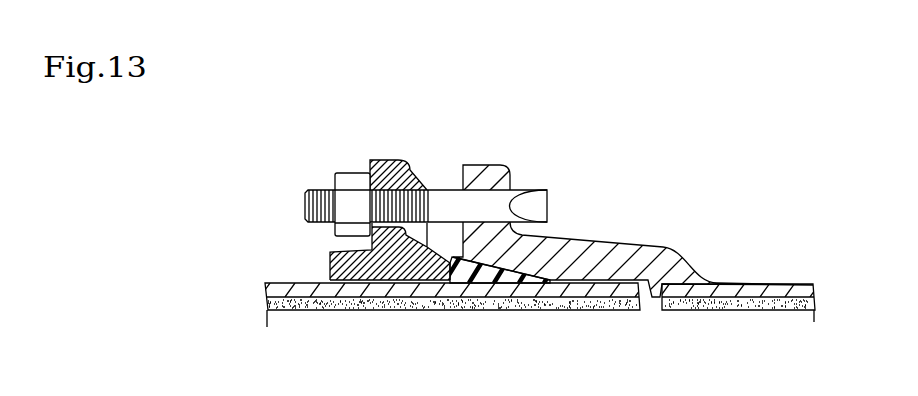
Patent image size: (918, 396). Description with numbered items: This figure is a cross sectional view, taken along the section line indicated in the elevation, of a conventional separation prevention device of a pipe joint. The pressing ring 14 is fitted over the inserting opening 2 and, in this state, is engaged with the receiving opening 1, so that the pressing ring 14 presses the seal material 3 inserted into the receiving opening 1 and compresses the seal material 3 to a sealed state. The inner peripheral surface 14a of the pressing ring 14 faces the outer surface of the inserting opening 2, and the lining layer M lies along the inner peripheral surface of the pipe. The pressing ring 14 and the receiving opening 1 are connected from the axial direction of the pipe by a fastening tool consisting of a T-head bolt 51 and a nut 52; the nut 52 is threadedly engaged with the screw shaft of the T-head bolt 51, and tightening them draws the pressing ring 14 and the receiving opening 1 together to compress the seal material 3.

The receiving opening 1 is at (647, 247).
The inserting opening 2 is at (280, 283).
The seal material 3 is at (498, 275).
The pressing ring 14 is at (407, 168).
The inner peripheral surface 14a is at (386, 281).
The T-head bolt 51 is at (308, 189).
The nut 52 is at (347, 172).
The lining layer M is at (576, 308).